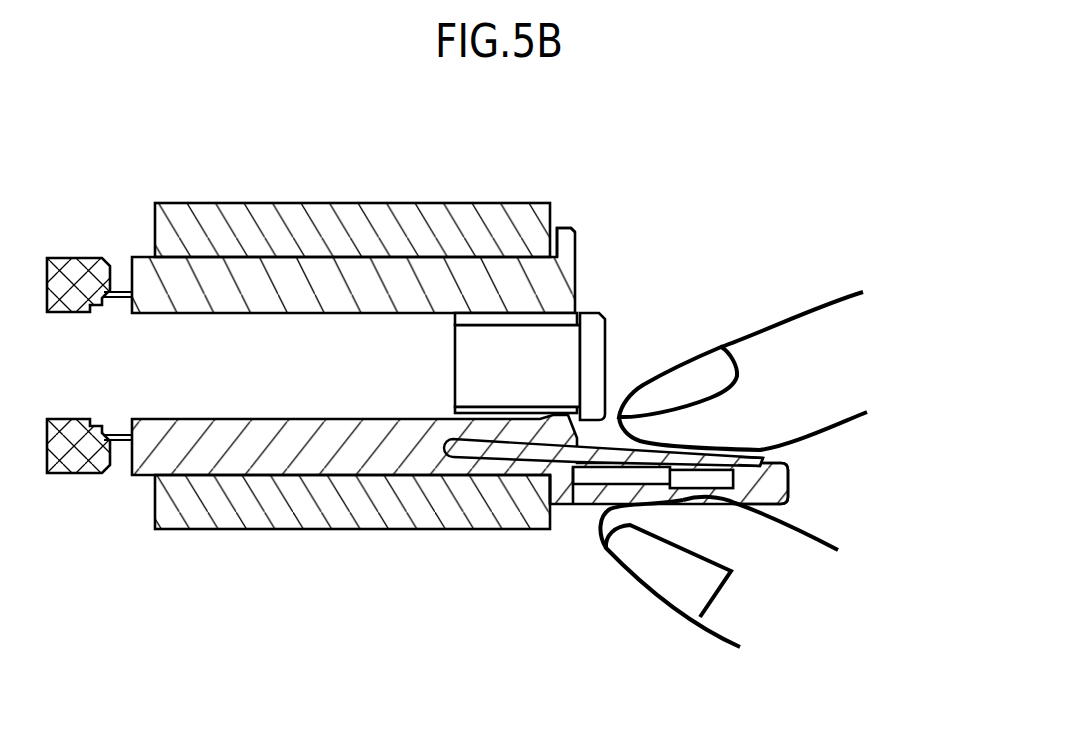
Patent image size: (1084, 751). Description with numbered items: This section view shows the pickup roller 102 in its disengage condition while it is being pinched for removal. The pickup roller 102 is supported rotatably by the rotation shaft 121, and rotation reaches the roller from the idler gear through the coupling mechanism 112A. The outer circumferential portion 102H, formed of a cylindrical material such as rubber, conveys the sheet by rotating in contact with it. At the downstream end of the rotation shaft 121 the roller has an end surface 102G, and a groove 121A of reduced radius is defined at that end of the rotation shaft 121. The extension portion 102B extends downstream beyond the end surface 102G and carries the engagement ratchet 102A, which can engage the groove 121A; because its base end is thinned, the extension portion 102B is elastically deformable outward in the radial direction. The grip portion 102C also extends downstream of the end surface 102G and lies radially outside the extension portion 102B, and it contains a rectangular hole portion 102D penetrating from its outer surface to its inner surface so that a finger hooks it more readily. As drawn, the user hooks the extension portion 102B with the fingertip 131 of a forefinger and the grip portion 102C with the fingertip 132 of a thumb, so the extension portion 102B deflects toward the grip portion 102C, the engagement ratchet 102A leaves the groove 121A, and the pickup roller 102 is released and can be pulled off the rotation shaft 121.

The pickup roller 102 is at (528, 368).
The engagement ratchet 102A is at (687, 390).
The extension portion 102B is at (766, 455).
The grip portion 102C is at (781, 498).
The hole portion 102D is at (680, 495).
The end surface 102G is at (580, 233).
The outer circumferential portion 102H is at (450, 202).
The coupling mechanism 112A is at (93, 270).
The rotation shaft 121 is at (602, 329).
The groove 121A is at (532, 325).
The fingertip 131 is at (807, 323).
The fingertip 132 is at (740, 637).